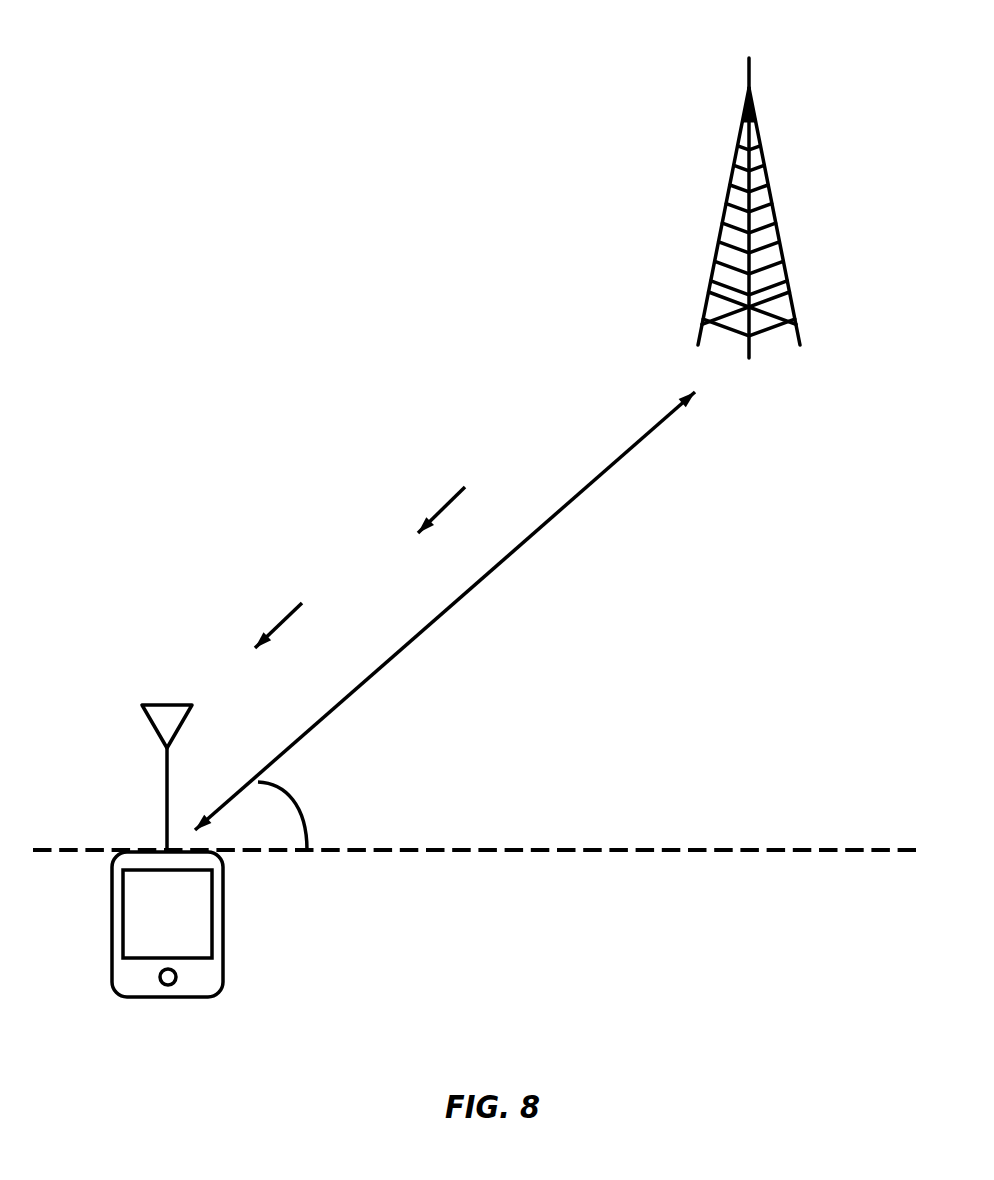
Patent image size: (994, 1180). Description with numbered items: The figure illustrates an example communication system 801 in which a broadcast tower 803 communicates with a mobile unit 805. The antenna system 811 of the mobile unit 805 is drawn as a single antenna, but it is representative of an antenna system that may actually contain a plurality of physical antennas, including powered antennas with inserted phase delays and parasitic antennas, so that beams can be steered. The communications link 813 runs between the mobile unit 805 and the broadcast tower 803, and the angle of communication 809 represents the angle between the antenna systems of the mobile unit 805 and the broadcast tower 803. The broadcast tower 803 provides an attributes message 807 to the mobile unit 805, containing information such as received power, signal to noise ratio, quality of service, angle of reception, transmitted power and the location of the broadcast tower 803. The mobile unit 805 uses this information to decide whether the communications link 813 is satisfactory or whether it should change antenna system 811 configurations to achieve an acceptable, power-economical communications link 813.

The communication system 801 is at (250, 100).
The broadcast tower 803 is at (740, 130).
The mobile unit 805 is at (168, 997).
The attributes message 807 is at (347, 533).
The angle of communication 809 is at (290, 793).
The antenna system 811 is at (162, 705).
The communications link 813 is at (498, 565).